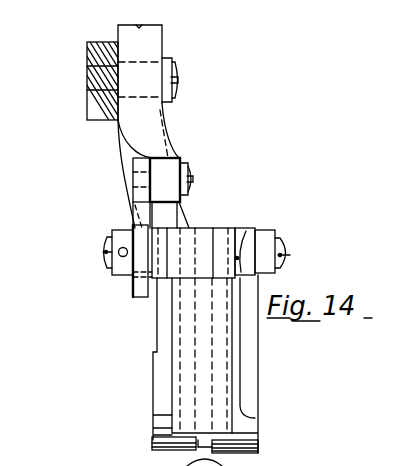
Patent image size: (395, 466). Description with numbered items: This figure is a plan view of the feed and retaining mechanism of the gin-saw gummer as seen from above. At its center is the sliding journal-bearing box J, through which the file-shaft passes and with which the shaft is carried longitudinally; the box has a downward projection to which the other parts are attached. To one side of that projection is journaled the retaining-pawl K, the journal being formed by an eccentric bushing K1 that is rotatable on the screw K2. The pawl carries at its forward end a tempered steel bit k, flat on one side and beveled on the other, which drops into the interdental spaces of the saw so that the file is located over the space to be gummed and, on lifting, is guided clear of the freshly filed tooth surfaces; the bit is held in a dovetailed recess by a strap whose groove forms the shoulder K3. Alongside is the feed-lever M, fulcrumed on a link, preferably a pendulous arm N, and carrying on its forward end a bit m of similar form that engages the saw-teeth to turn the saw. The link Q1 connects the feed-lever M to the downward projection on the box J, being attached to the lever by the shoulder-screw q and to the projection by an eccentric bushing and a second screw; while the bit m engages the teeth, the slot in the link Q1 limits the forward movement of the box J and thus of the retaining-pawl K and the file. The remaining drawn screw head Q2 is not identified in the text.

The pendulous arm N is at (87, 110).
The feed-lever M is at (147, 128).
The link Q1 is at (92, 307).
The shoulder-screw q is at (191, 190).
The pivot screw head Q2 is at (110, 263).
The eccentric bushing K1 is at (262, 233).
The shoulder K3 is at (243, 236).
The screw K2 is at (292, 256).
The retaining-pawl K is at (253, 342).
The sliding journal-bearing box J is at (207, 373).
The bit m is at (170, 443).
The bit k is at (203, 448).